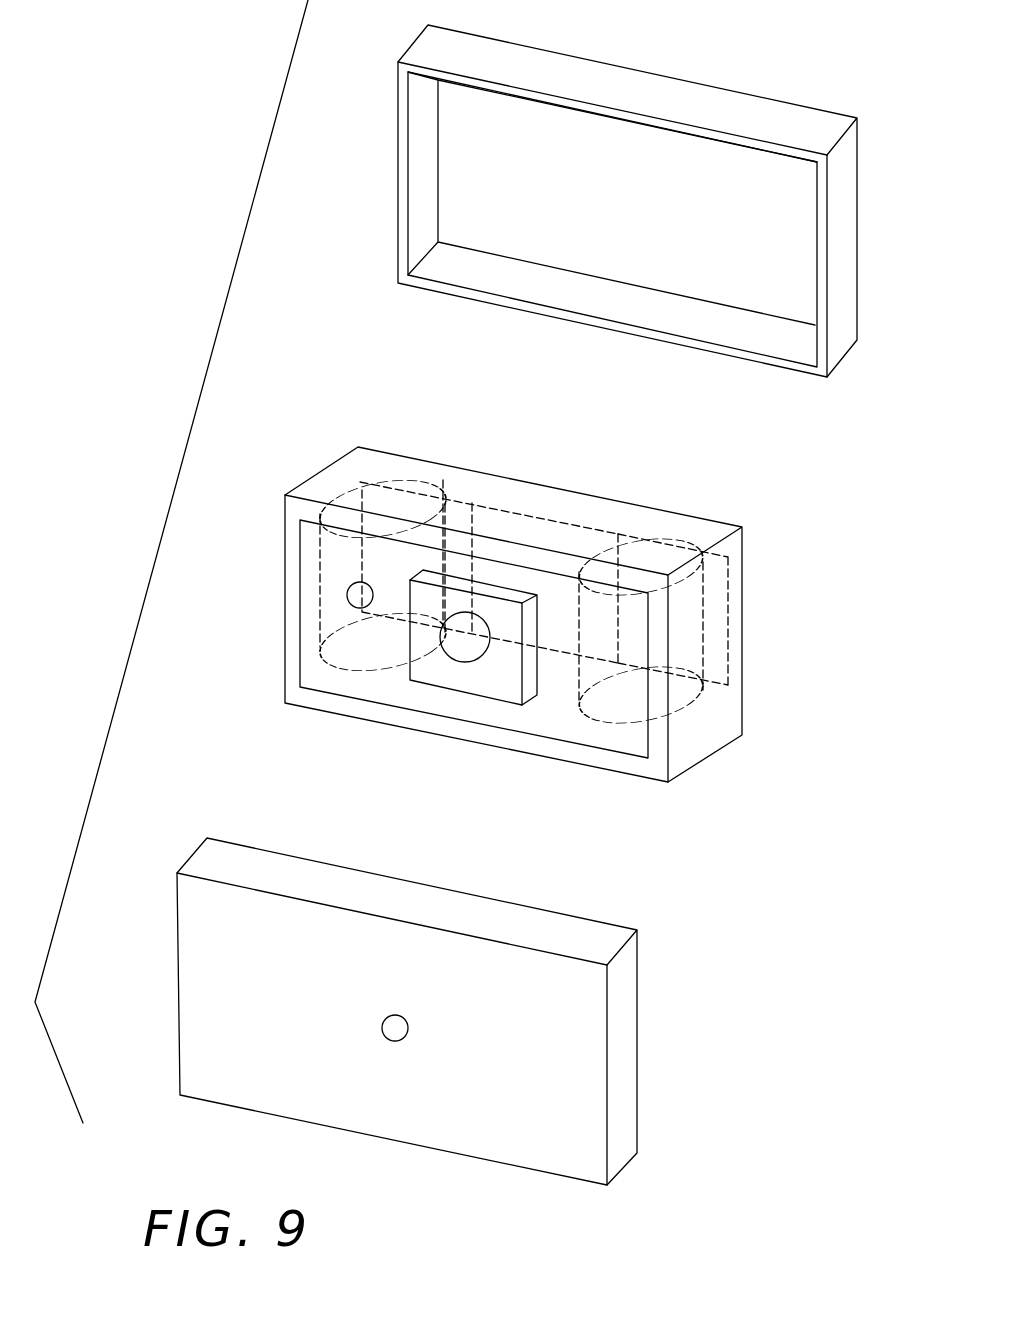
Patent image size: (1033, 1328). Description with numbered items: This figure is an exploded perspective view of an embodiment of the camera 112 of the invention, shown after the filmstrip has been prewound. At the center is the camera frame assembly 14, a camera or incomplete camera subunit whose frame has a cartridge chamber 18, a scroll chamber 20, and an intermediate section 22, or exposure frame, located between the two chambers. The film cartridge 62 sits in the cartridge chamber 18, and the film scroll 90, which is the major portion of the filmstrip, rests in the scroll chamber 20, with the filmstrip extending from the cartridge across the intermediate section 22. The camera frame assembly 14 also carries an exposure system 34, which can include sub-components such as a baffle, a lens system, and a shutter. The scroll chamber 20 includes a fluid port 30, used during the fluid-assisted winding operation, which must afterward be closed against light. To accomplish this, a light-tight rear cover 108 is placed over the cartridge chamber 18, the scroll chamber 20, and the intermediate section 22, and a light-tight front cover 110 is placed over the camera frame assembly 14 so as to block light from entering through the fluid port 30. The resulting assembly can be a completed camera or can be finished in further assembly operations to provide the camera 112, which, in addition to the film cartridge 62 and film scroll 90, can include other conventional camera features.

The camera frame assembly 14 is at (720, 748).
The cartridge chamber 18 is at (443, 480).
The scroll chamber 20 is at (713, 563).
The intermediate section 22 is at (533, 513).
The fluid port 30 is at (347, 592).
The exposure system 34 is at (498, 697).
The film cartridge 62 is at (362, 490).
The film scroll 90 is at (632, 540).
The light-tight rear cover 108 is at (585, 55).
The light-tight front cover 110 is at (445, 887).
The camera 112 is at (213, 347).